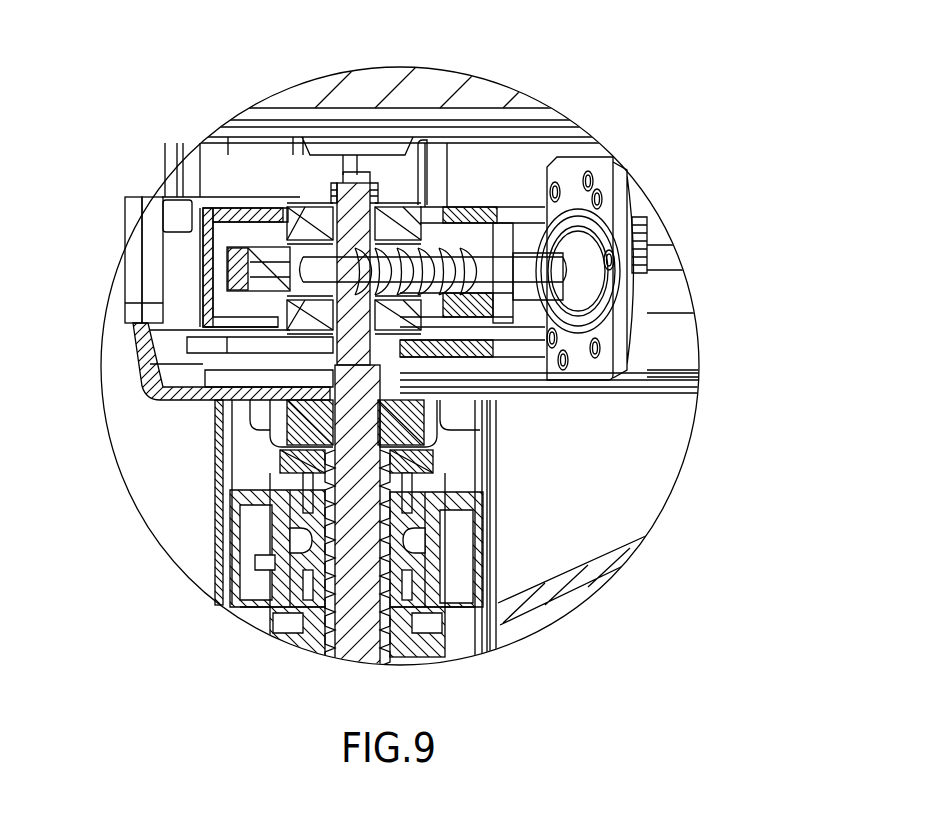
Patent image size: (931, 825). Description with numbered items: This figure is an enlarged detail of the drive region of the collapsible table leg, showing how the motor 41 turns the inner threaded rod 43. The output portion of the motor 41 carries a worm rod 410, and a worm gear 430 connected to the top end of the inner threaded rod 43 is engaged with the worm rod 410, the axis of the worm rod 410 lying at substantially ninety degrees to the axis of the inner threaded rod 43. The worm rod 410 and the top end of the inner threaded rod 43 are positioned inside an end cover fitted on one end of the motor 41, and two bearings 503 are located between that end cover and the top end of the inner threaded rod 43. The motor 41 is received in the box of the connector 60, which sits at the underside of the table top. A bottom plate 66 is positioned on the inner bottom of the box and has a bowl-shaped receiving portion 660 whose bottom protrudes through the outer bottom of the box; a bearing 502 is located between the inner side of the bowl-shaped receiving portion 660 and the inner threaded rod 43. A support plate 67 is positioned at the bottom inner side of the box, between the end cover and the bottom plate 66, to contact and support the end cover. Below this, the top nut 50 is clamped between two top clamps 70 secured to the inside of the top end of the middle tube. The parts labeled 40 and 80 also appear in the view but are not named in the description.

The motor 40 is at (688, 252).
The motor 41 is at (664, 330).
The inner threaded rod 43 is at (340, 598).
The top nut 50 is at (280, 475).
The connector 60 is at (253, 378).
The bottom plate 66 is at (152, 380).
The support plate 67 is at (212, 342).
The top clamps 70 is at (280, 542).
The side plate 80 is at (490, 520).
The worm rod 410 is at (450, 182).
The worm gear 430 is at (354, 234).
The bearing 502 is at (407, 418).
The bearings 503 is at (300, 223).
The bowl-shaped receiving portion 660 is at (287, 417).